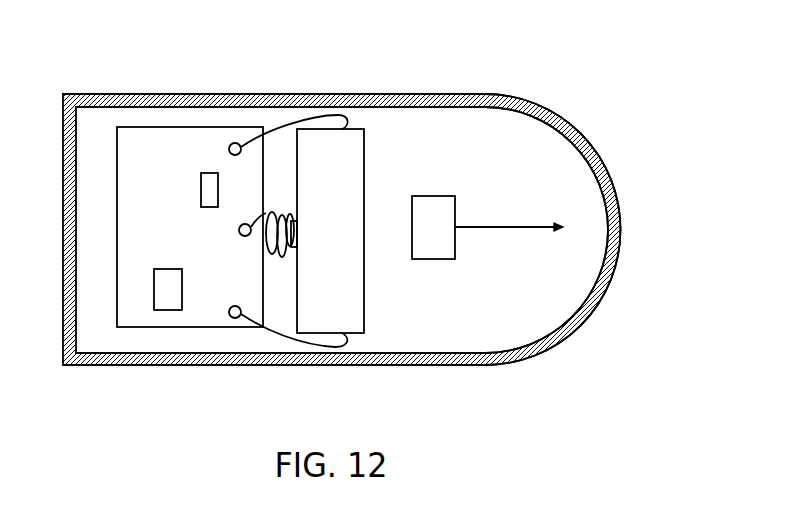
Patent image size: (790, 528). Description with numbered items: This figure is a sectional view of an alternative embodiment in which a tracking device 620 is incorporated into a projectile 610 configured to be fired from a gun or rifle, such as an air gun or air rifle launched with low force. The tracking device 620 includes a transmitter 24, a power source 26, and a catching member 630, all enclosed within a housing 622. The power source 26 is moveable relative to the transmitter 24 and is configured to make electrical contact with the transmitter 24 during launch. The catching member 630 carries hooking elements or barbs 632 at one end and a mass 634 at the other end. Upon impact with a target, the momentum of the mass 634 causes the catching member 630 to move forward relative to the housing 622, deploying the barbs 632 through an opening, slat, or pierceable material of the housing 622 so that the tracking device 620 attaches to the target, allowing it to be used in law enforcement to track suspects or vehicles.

The projectile 610 is at (365, 210).
The tracking device 620 is at (174, 94).
The housing 622 is at (590, 135).
The transmitter 24 is at (137, 317).
The power source 26 is at (355, 317).
The mass 634 is at (433, 203).
The barbs 632 is at (509, 234).
The catching member 630 is at (493, 230).